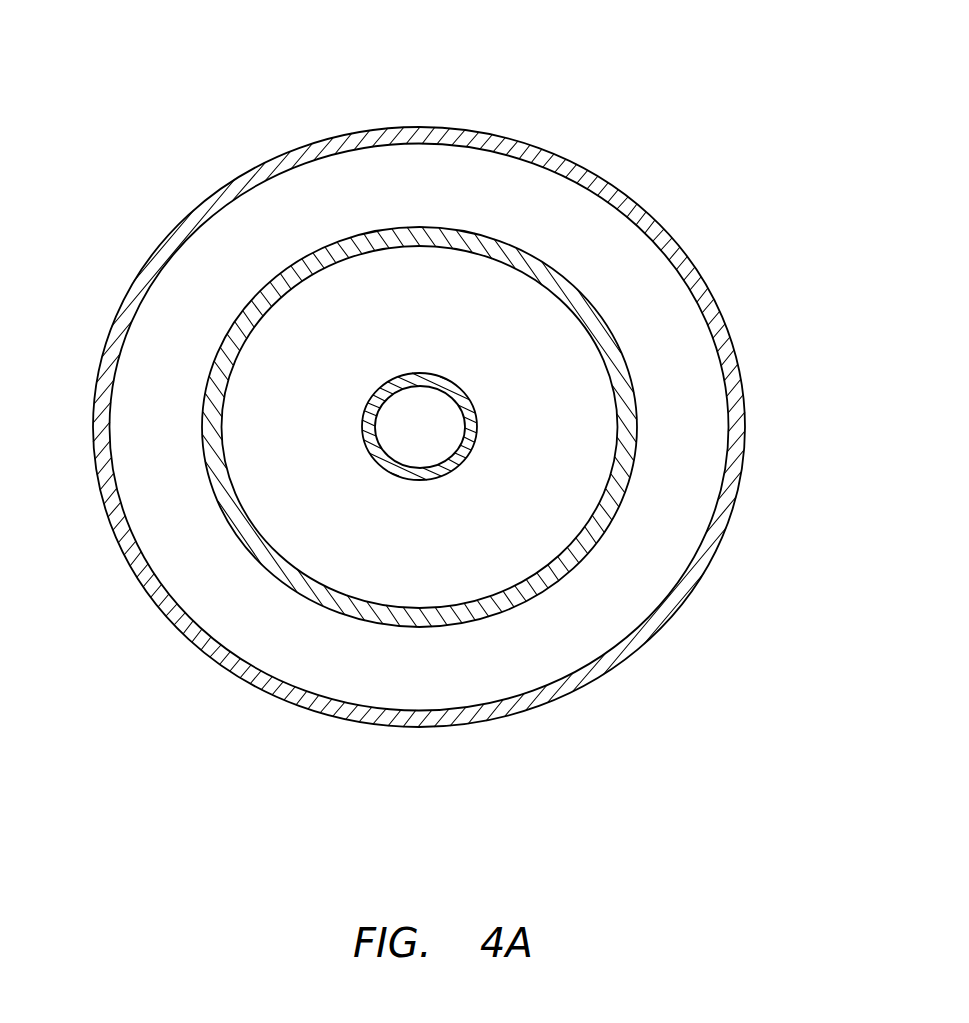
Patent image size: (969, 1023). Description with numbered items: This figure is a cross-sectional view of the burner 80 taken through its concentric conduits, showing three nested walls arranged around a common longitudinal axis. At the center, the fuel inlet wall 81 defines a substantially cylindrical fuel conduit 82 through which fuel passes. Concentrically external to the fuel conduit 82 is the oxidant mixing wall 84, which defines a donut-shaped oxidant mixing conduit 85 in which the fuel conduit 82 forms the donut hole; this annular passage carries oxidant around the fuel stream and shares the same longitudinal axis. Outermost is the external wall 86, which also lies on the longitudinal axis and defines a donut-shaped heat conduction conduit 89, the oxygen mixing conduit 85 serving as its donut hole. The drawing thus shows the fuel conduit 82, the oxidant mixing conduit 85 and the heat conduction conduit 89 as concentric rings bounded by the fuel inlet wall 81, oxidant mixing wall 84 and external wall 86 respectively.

The catheter assembly 80 is at (427, 365).
The fuel inlet wall 81 is at (579, 357).
The fuel conduit 82 is at (560, 314).
The oxidant mixing wall 84 is at (383, 227).
The oxidant mixing conduit 85 is at (437, 308).
The external wall 86 is at (137, 275).
The heat conduction conduit 89 is at (257, 238).